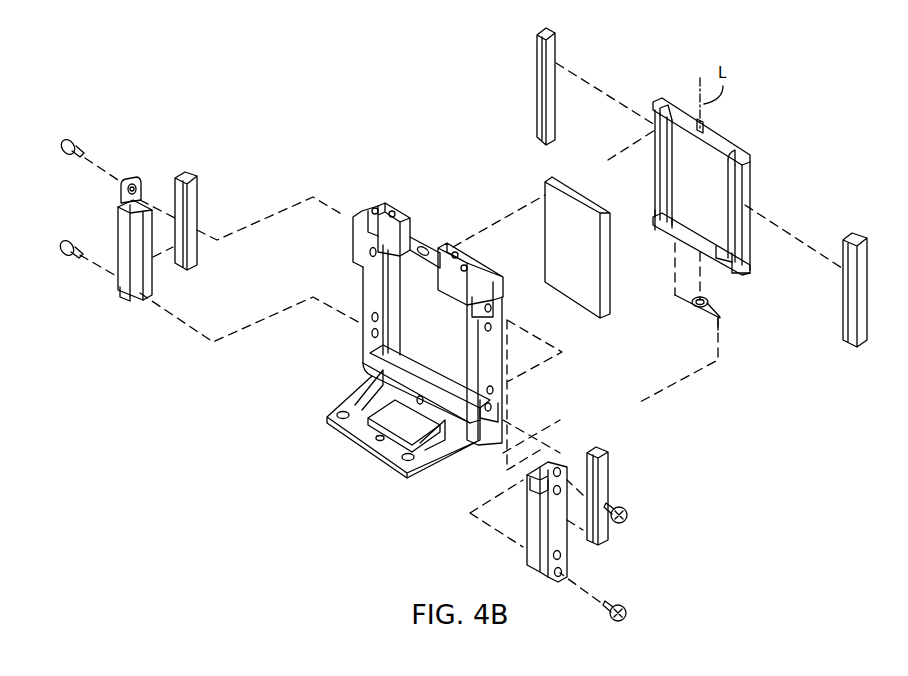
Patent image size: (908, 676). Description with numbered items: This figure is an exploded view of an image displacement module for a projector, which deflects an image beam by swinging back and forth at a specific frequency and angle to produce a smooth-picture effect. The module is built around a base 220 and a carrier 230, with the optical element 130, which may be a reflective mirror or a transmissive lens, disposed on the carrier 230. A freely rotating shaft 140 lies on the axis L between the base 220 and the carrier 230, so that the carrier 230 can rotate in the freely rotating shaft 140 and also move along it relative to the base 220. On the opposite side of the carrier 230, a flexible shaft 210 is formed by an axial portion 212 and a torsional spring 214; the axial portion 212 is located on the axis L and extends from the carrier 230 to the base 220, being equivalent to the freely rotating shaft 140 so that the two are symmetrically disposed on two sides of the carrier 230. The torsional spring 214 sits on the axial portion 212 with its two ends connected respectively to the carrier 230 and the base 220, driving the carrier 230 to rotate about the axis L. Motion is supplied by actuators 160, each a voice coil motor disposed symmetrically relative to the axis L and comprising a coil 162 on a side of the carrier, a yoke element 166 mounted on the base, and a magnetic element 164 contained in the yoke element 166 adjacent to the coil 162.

The optical element 130 is at (585, 292).
The freely rotating shaft 140 is at (705, 132).
The actuator 160 is at (252, 67).
The coil 162 is at (535, 97).
The magnetic element 164 is at (192, 193).
The yoke element 166 is at (128, 183).
The flexible shaft 210 is at (808, 419).
The axial portion 212 is at (717, 243).
The torsional spring 214 is at (713, 302).
The base 220 is at (392, 448).
The carrier 230 is at (750, 187).